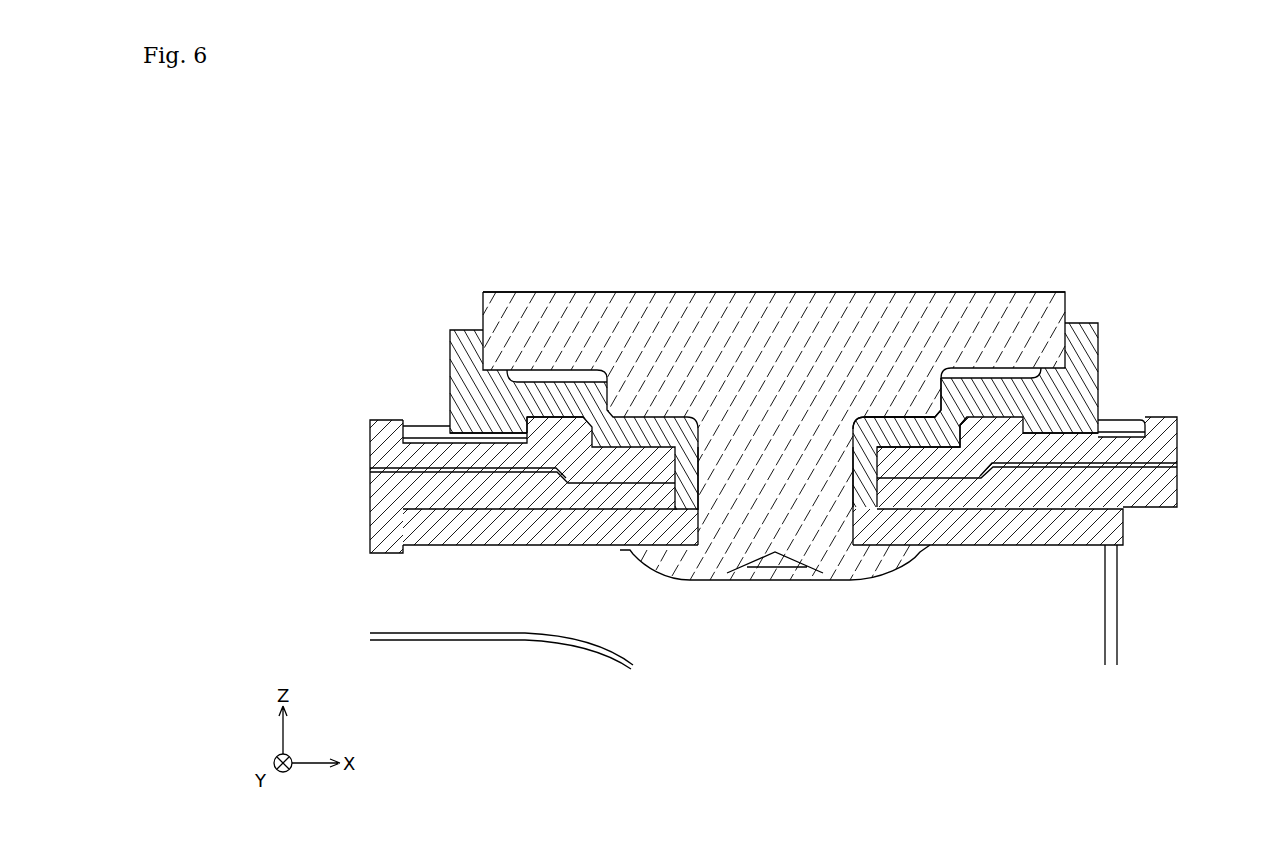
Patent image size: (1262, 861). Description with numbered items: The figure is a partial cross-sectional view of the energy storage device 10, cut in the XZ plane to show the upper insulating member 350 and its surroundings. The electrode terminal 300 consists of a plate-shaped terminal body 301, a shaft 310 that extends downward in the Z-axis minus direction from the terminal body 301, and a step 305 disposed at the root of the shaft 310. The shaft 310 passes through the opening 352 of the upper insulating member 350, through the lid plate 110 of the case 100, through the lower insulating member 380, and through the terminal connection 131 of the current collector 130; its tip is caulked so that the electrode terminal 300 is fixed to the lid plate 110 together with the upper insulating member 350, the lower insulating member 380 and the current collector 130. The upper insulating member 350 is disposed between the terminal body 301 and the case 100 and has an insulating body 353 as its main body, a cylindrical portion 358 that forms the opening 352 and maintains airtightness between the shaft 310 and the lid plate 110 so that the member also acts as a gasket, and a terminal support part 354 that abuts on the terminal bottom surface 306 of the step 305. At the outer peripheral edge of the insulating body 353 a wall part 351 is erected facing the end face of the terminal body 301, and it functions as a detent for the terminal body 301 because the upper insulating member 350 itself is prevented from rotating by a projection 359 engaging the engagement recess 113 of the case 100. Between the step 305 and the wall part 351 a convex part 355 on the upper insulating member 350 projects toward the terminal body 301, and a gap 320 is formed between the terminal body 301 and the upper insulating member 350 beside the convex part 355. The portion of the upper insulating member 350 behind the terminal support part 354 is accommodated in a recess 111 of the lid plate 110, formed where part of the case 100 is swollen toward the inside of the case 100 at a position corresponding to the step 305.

The energy storage device 10 is at (1101, 163).
The case 100 is at (775, 461).
The lid plate 110 is at (772, 474).
The recess 111 is at (620, 463).
The engagement recess 113 is at (427, 433).
The current collector 130 is at (1140, 573).
The terminal connection 131 is at (1035, 530).
The electrode terminal 300 is at (693, 243).
The terminal body 301 is at (812, 310).
The step 305 is at (910, 397).
The terminal bottom surface 306 is at (927, 417).
The shaft 310 is at (798, 522).
The gap 320 is at (557, 380).
The upper insulating member 350 is at (809, 456).
The wall part 351 is at (465, 330).
The opening 352 is at (700, 467).
The insulating body 353 is at (557, 400).
The terminal support part 354 is at (903, 433).
The convex part 355 is at (497, 375).
The cylindrical portion 358 is at (682, 478).
The projection 359 is at (488, 422).
The lower insulating member 380 is at (442, 493).